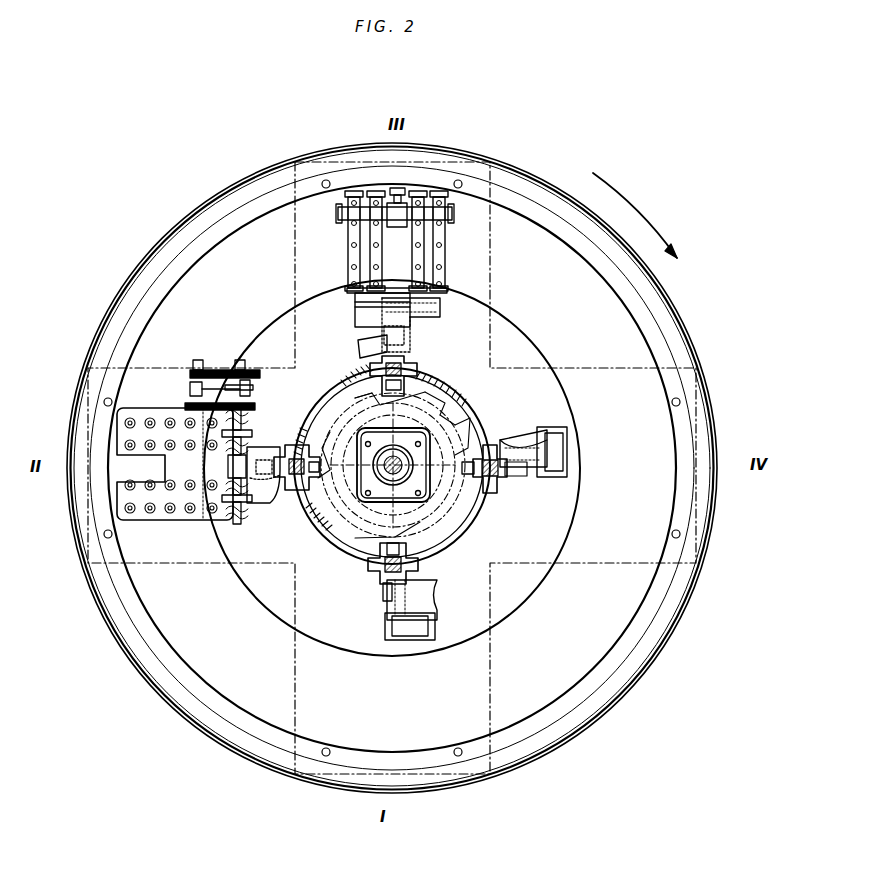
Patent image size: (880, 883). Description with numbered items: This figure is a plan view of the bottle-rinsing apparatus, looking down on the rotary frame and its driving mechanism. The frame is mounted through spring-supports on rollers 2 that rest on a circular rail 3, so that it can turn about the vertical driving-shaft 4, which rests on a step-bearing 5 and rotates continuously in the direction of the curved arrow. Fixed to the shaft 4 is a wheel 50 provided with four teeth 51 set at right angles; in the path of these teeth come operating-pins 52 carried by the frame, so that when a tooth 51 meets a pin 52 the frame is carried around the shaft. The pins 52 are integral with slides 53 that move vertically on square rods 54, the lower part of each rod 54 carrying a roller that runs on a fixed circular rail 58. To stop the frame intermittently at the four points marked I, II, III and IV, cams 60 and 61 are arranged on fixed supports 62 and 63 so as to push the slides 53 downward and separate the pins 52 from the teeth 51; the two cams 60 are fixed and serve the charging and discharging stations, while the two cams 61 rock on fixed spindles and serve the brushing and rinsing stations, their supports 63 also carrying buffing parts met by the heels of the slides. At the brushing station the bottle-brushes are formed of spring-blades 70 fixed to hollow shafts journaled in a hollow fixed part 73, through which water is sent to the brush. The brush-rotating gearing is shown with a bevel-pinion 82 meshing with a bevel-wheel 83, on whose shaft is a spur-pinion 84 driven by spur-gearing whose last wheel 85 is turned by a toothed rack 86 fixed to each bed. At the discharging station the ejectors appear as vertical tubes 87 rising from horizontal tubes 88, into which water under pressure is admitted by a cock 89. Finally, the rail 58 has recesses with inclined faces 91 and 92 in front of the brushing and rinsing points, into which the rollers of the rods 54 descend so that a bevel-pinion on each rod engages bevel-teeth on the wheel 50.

The rollers 2 is at (402, 436).
The circular rail 3 is at (716, 466).
The vertical driving-shaft 4 is at (393, 466).
The step-bearing 5 is at (447, 420).
The wheel 50 is at (432, 405).
The teeth 51 is at (440, 378).
The operating-pins 52 is at (408, 384).
The slides 53 is at (412, 366).
The square rods 54 is at (300, 490).
The fixed circular rail 58 is at (342, 540).
The fixed cams 60 is at (512, 444).
The rocking cams 61 is at (378, 336).
The fixed supports 62 is at (552, 468).
The supports 63 is at (356, 318).
The spring-blades 70 is at (126, 423).
The fixed part 73 is at (185, 512).
The bevel-pinion 82 is at (249, 442).
The bevel-wheel 83 is at (250, 432).
The spur-pinion 84 is at (256, 408).
The last wheel 85 is at (252, 396).
The toothed rack 86 is at (258, 387).
The vertical tubes 87 is at (440, 246).
The horizontal tubes 88 is at (356, 254).
The cock 89 is at (396, 190).
The inclined face 91 is at (359, 375).
The inclined face 92 is at (440, 365).